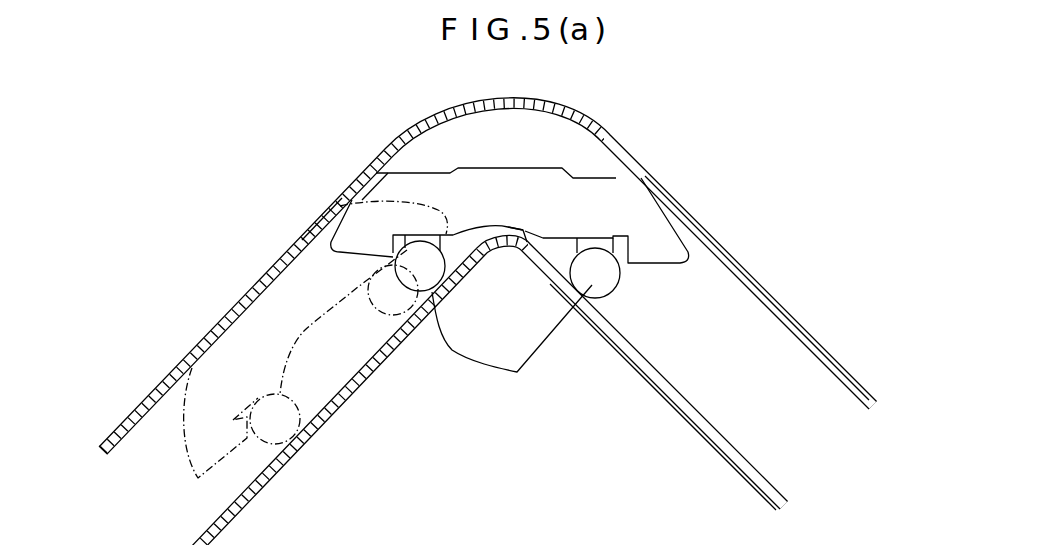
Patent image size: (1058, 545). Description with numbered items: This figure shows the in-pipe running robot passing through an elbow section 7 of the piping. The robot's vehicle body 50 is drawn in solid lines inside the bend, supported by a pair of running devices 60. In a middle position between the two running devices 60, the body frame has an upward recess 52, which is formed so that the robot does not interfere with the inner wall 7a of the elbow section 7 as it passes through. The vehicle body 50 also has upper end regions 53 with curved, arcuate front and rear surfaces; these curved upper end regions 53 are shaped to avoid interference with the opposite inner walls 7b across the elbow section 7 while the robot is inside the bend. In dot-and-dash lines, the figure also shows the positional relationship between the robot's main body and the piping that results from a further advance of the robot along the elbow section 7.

The elbow section 7 is at (405, 121).
The inner wall 7a is at (508, 248).
The opposite inner walls 7b is at (322, 222).
The vehicle body 50 is at (617, 183).
The upward recess 52 is at (531, 247).
The upper end regions 53 is at (355, 186).
The running devices 60 is at (519, 373).